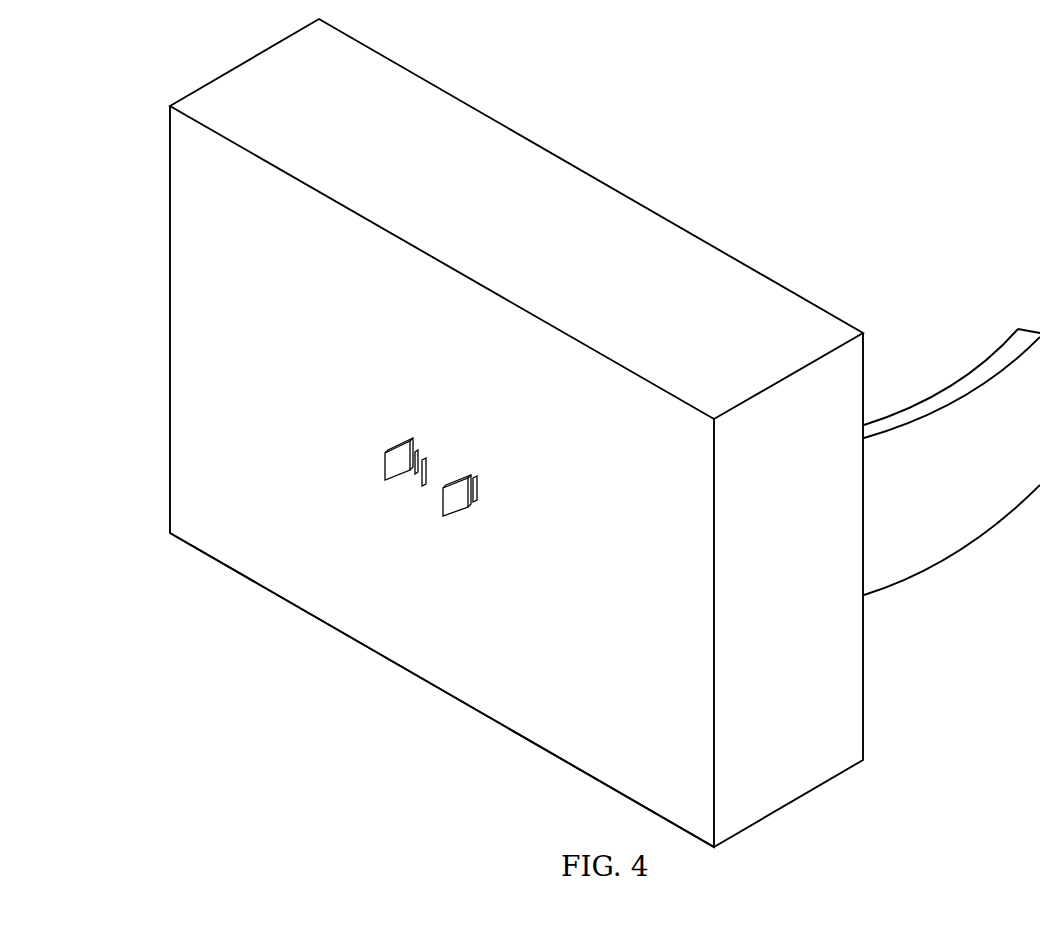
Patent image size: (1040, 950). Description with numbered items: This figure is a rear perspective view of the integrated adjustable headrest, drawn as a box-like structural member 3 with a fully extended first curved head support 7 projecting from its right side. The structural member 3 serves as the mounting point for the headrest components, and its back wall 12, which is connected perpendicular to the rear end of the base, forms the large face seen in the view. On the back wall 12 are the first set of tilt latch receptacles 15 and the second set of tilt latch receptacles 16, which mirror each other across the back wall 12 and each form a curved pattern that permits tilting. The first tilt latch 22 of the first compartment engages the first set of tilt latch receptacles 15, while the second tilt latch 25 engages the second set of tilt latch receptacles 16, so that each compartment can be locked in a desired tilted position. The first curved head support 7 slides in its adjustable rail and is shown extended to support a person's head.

The structural member 3 is at (597, 207).
The first curved head support 7 is at (972, 367).
The back wall 12 is at (372, 640).
The first set of tilt latch receptacles 15 is at (459, 482).
The second set of tilt latch receptacles 16 is at (424, 459).
The first tilt latch 22 is at (443, 514).
The second tilt latch 25 is at (387, 463).